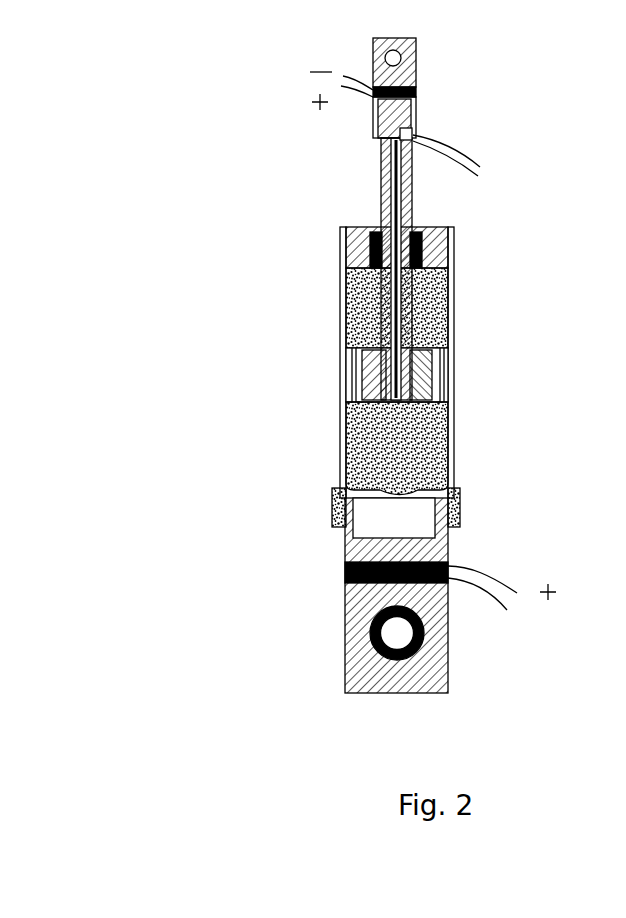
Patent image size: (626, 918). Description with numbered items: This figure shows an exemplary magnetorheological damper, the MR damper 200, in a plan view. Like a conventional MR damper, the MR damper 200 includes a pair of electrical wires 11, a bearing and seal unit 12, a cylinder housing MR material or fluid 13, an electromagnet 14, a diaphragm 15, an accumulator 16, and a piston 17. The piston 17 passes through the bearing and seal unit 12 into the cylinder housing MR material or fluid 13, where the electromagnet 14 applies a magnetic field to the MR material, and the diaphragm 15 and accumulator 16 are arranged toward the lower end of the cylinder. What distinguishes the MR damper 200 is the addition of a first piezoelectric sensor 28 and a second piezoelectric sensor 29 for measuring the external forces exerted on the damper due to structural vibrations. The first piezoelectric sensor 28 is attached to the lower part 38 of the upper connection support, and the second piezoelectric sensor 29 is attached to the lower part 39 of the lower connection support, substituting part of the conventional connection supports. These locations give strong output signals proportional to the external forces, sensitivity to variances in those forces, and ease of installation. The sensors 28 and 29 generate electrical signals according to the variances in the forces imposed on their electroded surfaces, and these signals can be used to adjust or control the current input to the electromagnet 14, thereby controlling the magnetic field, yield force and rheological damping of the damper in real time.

The MR damper 200 is at (452, 747).
The first piezoelectric sensor 28 is at (420, 77).
The lower part of the upper connection support 38 is at (417, 112).
The pair of electrical wires 11 is at (466, 155).
The piston 17 is at (415, 195).
The bearing and seal unit 12 is at (340, 226).
The cylinder housing MR material or fluid 13 is at (343, 320).
The electromagnet 14 is at (346, 383).
The diaphragm 15 is at (347, 482).
The accumulator 16 is at (378, 523).
The lower part of the lower connection support 39 is at (472, 557).
The second piezoelectric sensor 29 is at (460, 607).